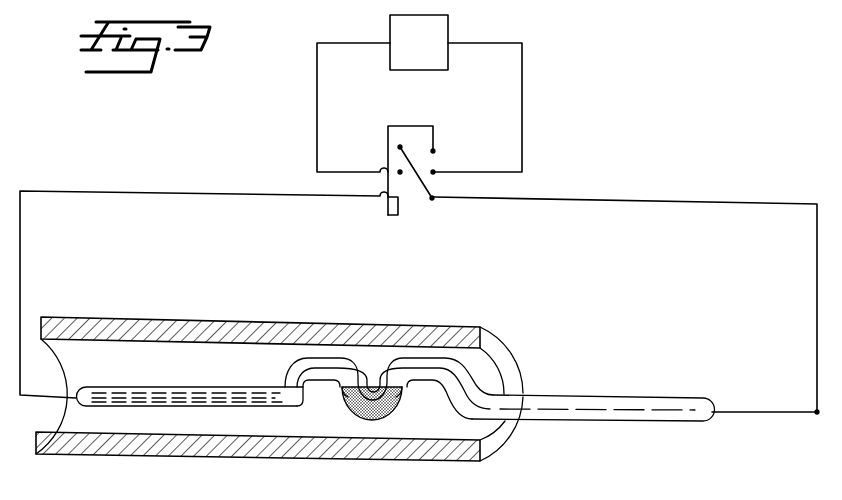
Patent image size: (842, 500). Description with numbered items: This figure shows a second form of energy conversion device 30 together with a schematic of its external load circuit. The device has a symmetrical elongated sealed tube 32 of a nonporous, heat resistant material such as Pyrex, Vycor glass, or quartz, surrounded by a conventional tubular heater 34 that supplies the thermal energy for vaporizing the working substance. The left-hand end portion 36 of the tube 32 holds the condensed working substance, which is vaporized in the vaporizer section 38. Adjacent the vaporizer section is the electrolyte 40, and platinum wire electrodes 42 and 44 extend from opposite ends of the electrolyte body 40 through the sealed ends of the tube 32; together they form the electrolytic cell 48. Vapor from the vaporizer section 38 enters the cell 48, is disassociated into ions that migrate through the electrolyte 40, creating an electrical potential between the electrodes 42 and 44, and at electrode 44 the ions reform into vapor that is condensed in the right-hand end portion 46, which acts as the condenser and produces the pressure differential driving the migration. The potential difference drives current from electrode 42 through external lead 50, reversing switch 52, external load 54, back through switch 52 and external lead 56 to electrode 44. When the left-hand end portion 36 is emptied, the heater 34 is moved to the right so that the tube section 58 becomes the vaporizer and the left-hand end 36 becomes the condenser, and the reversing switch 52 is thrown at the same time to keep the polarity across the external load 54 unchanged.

The energy conversion device 30 is at (172, 172).
The sealed tube 32 is at (171, 384).
The tubular heater 34 is at (225, 320).
The left-hand end portion 36 is at (156, 411).
The vaporizer section 38 is at (302, 406).
The electrolyte 40 is at (397, 417).
The electrode 42 is at (343, 390).
The electrode 44 is at (401, 395).
The right-hand end portion 46 is at (666, 396).
The electrolytic cell 48 is at (371, 378).
The external lead 50 is at (160, 193).
The reversing switch 52 is at (377, 162).
The external load 54 is at (430, 53).
The external lead 56 is at (591, 205).
The tube section 58 is at (470, 414).